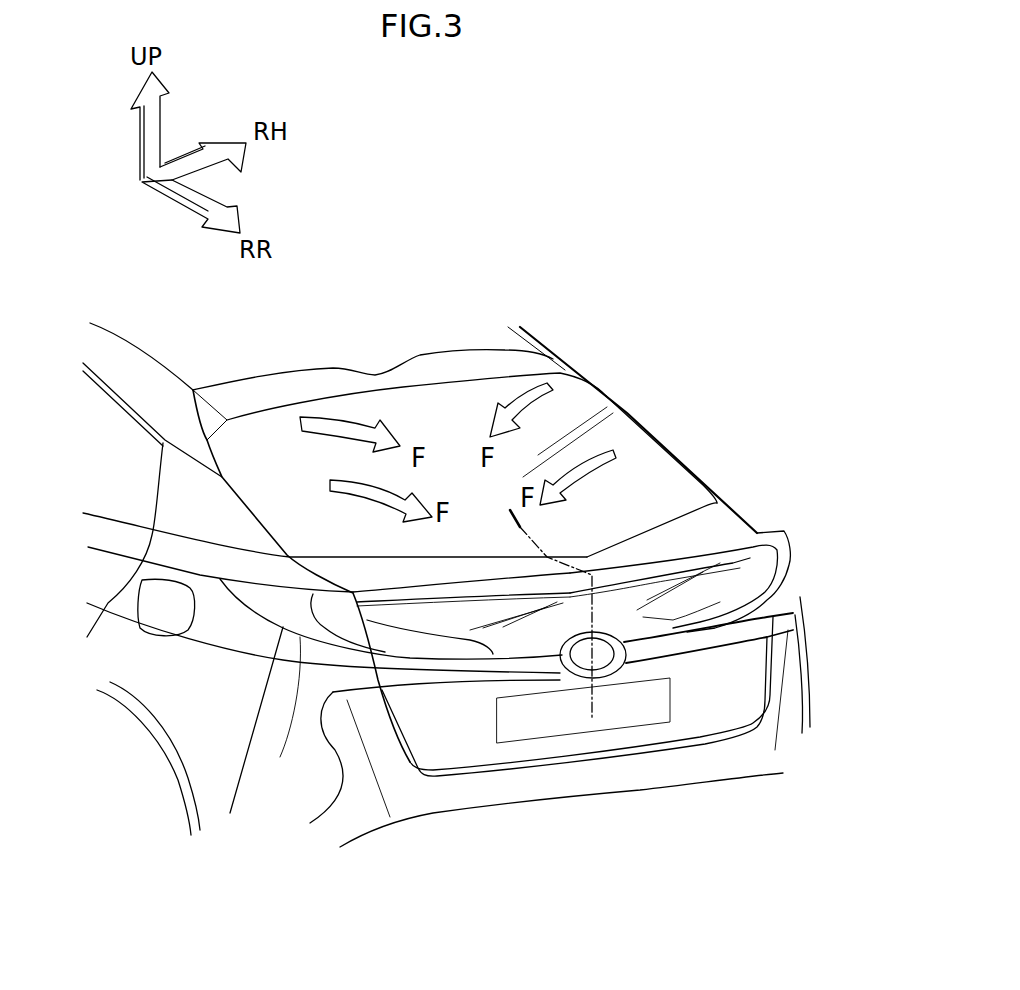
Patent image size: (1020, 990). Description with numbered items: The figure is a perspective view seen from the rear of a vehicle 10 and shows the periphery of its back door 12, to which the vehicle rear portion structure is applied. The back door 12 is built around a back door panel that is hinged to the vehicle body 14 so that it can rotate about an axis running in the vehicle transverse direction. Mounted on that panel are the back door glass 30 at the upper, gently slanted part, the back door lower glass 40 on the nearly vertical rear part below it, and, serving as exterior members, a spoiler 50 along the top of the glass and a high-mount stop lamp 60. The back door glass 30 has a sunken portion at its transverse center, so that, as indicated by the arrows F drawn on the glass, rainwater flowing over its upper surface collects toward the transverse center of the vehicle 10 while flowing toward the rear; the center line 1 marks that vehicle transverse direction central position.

The vehicle 10 is at (619, 279).
The back door 12 is at (626, 412).
The back door glass 30 is at (665, 474).
The spoiler 50 is at (710, 527).
The vehicle body 14 is at (800, 597).
The back door lower glass 40 is at (647, 618).
The high-mount stop lamp 60 is at (463, 588).
The vehicle center line 1 is at (506, 512).